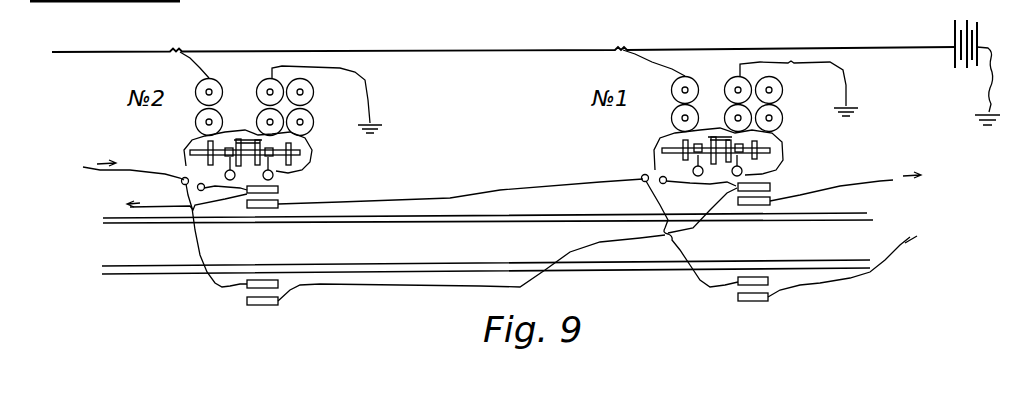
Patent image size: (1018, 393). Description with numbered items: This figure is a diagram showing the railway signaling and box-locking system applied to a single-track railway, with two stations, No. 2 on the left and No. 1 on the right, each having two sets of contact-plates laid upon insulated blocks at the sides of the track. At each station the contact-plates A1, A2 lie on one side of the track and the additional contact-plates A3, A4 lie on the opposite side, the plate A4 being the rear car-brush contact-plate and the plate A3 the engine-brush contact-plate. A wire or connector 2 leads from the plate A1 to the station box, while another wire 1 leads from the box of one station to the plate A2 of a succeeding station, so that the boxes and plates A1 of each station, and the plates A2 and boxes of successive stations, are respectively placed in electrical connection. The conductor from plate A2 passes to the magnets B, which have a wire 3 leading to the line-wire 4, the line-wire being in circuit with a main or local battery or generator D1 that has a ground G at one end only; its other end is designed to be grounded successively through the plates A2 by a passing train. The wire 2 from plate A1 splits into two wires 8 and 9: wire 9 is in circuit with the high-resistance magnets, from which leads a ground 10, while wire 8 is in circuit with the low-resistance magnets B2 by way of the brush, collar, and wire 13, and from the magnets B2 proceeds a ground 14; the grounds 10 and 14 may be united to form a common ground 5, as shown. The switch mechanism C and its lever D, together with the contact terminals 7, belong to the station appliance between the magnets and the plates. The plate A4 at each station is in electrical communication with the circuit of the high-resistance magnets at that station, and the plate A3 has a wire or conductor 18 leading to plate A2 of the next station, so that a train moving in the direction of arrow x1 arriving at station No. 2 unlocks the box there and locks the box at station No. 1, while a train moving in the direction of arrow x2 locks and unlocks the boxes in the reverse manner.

The wire 1 is at (513, 213).
The wire or connector 2 is at (470, 204).
The wire 3 is at (432, 64).
The line-wire 4 is at (503, 41).
The common ground 5 is at (608, 72).
The contact terminal 7 is at (424, 182).
The wire 8 is at (483, 169).
The wire 9 is at (703, 159).
The ground 10 is at (552, 75).
The wire 13 is at (790, 136).
The ground 14 is at (559, 89).
The wire or conductor 18 is at (597, 268).
The magnets B is at (461, 106).
The low-resistance magnets B2 is at (545, 106).
The switch mechanism C is at (483, 151).
The switch lever D is at (530, 158).
The main or local battery or generator D1 is at (959, 63).
The ground G is at (684, 118).
The contact-plate A1 is at (280, 189).
The contact-plate A2 is at (262, 208).
The contact-plate A3 is at (512, 311).
The contact-plate A4 is at (262, 280).
The arrow x1 is at (148, 253).
The arrow x2 is at (960, 272).